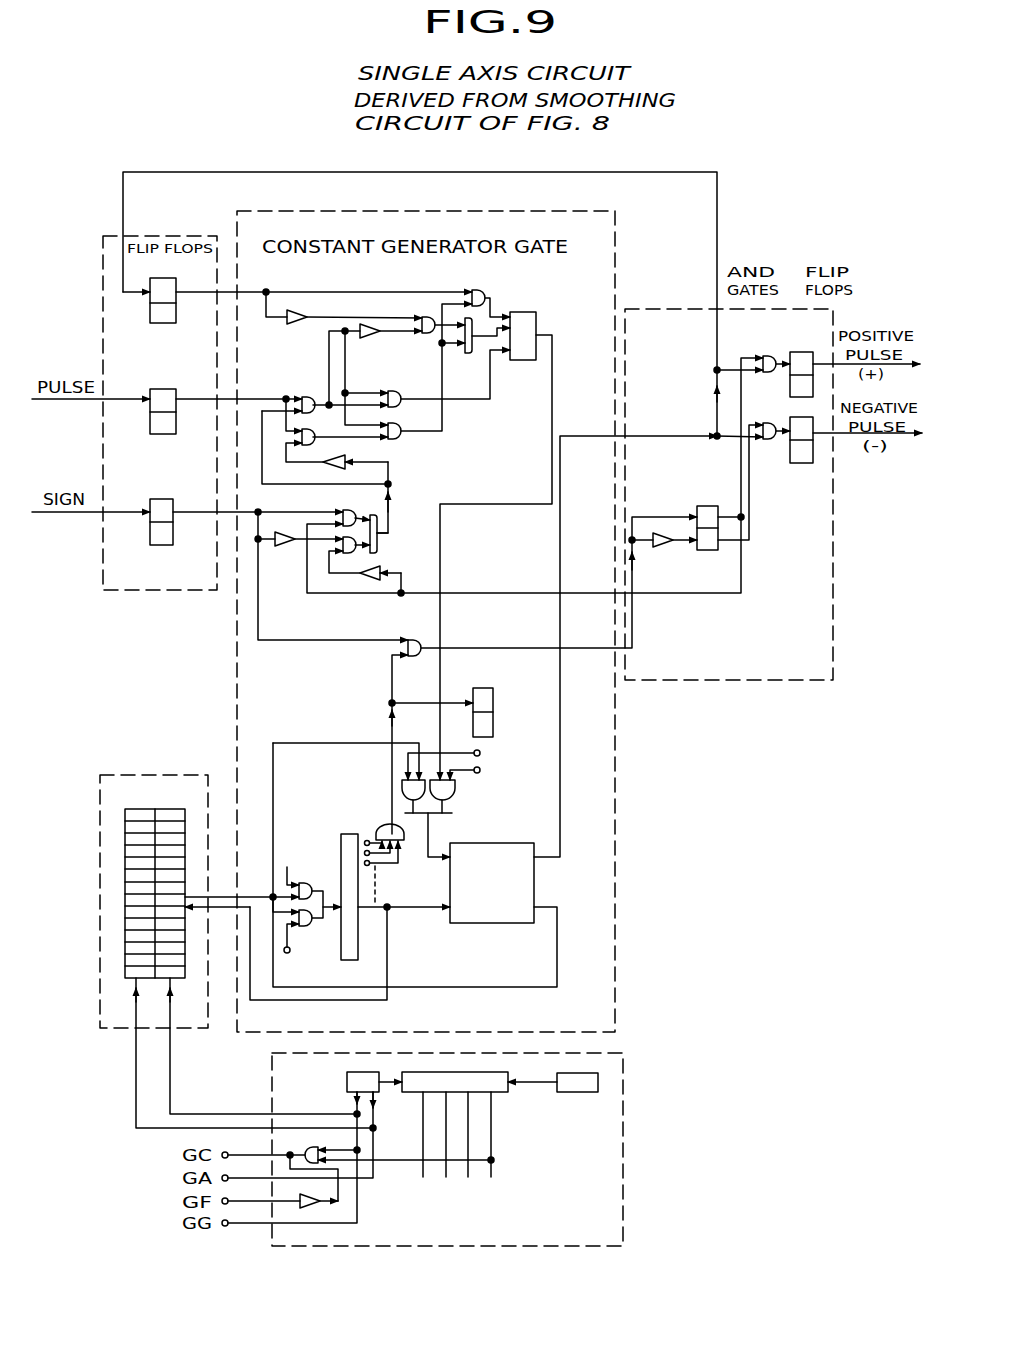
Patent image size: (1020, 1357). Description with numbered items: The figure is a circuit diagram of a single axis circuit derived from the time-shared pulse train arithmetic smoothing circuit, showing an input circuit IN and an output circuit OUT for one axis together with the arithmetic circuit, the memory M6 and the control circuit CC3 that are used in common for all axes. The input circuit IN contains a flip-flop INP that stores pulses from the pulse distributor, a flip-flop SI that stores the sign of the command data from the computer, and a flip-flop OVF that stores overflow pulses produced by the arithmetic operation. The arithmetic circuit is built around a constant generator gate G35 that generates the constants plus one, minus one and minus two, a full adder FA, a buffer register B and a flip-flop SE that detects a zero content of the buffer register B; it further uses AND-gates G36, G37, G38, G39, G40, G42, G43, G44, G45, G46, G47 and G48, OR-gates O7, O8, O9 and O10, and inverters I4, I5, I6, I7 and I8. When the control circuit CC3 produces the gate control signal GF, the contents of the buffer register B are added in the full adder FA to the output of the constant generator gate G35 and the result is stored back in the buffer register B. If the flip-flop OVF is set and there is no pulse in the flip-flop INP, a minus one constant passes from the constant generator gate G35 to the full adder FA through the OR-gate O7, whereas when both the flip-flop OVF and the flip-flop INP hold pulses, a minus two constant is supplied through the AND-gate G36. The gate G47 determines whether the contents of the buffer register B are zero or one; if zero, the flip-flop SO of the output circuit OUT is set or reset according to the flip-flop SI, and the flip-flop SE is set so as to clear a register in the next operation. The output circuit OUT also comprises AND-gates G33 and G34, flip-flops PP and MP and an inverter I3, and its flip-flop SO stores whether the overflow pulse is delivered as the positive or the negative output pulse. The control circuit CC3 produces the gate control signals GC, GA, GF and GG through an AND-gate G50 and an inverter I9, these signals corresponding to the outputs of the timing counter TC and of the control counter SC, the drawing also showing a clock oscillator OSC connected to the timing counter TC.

The flip-flop OVF is at (186, 278).
The flip-flop INP is at (186, 388).
The flip-flop SI is at (181, 496).
The input circuit IN is at (112, 587).
The inverter I3 is at (660, 548).
The inverter I4 is at (344, 307).
The inverter I5 is at (366, 338).
The inverter I6 is at (330, 468).
The inverter I7 is at (298, 548).
The inverter I8 is at (360, 577).
The inverter I9 is at (300, 1208).
The AND-gate G33 is at (767, 356).
The AND-gate G34 is at (769, 440).
The constant generator gate G35 is at (562, 285).
The AND-gate G36 is at (482, 290).
The AND-gate G37 is at (424, 316).
The AND-gate G38 is at (396, 390).
The AND-gate G39 is at (398, 440).
The AND-gate G40 is at (312, 396).
The AND-gate G42 is at (352, 510).
The AND-gate G43 is at (341, 538).
The AND-gate G44 is at (422, 640).
The AND-gate G45 is at (406, 790).
The AND-gate G46 is at (446, 786).
The AND-gate G47 is at (406, 846).
The AND-gate G48 is at (338, 882).
The AND-gate G50 is at (318, 1148).
The OR-gate O7 is at (468, 347).
The OR-gate O8 is at (380, 540).
The OR-gate O9 is at (452, 812).
The OR-gate O10 is at (388, 925).
The flip-flop PP is at (804, 353).
The flip-flop MP is at (809, 418).
The flip-flop SO is at (728, 506).
The flip-flop SE is at (492, 704).
The full adder FA is at (545, 838).
The buffer register B is at (341, 846).
The memory M6 is at (197, 752).
The control counter SC is at (347, 1090).
The timing counter TC is at (490, 1089).
The clock oscillator OSC is at (598, 1082).
The output circuit OUT is at (648, 672).
The control circuit CC3 is at (600, 1204).
The gate control signal GA is at (459, 764).
The gate control signal GG is at (482, 772).
The gate control signal GC is at (291, 867).
The gate control signal GF is at (291, 948).